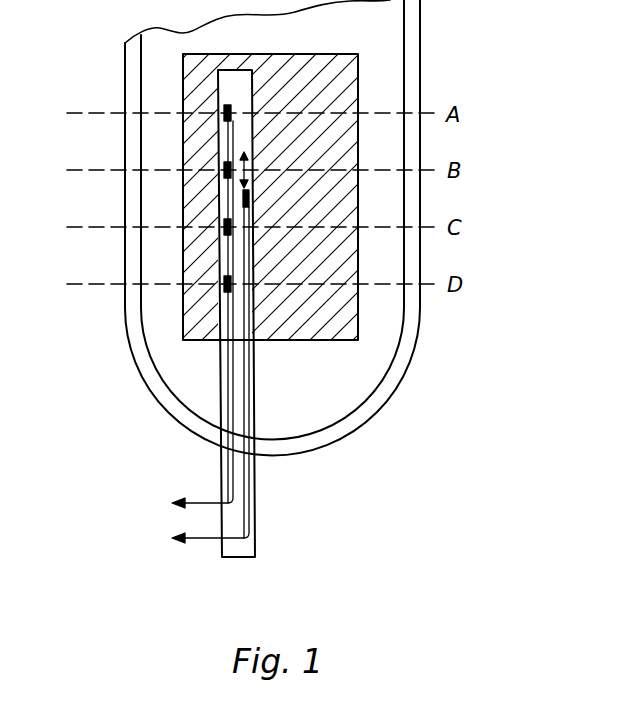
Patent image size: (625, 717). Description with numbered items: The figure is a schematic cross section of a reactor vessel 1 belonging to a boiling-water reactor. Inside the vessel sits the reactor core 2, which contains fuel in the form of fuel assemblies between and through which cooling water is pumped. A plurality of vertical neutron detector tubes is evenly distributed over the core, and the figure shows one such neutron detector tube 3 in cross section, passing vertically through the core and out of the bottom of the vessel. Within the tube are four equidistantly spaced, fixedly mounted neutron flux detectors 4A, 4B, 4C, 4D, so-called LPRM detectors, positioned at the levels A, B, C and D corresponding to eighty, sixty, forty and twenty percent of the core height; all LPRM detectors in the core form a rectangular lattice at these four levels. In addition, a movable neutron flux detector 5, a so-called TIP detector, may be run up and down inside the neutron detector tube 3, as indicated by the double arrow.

The reactor vessel 1 is at (430, 256).
The reactor core 2 is at (352, 205).
The neutron detector tube 3 is at (216, 380).
The neutron flux detector 4A is at (226, 113).
The neutron flux detector 4B is at (226, 170).
The neutron flux detector 4C is at (226, 227).
The neutron flux detector 4D is at (226, 284).
The movable neutron flux detector 5 is at (251, 188).